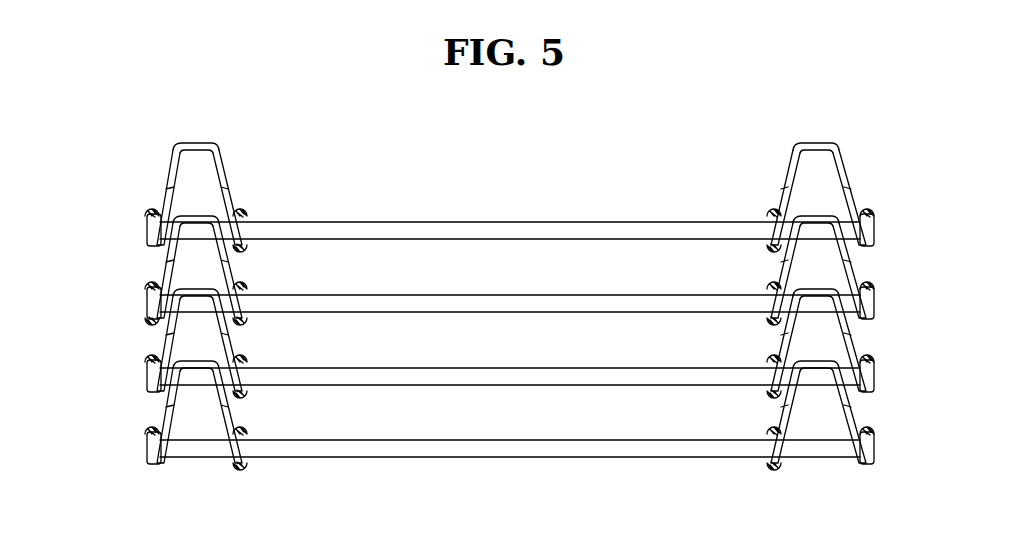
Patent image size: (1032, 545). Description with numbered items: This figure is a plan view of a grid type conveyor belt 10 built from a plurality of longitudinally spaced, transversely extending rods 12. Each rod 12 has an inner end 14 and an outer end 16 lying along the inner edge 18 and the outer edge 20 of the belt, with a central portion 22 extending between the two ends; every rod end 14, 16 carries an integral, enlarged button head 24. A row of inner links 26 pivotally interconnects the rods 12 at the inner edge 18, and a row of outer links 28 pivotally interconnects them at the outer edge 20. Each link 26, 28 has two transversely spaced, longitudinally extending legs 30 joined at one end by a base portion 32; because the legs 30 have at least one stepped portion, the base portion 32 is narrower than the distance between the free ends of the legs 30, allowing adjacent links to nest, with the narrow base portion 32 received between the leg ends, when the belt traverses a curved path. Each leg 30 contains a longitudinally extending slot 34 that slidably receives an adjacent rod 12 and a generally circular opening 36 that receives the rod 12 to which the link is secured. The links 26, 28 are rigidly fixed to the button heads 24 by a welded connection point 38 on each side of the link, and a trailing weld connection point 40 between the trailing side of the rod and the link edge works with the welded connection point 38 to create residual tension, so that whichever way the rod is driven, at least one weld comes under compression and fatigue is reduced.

The conveyor belt 10 is at (743, 143).
The rod 12 is at (455, 227).
The inner end 14 is at (148, 245).
The outer end 16 is at (868, 228).
The inner edge 18 is at (145, 176).
The outer edge 20 is at (887, 190).
The central portion 22 is at (553, 203).
The button head 24 is at (148, 224).
The inner link 26 is at (223, 152).
The outer link 28 is at (810, 148).
The leg 30 is at (169, 412).
The base portion 32 is at (190, 360).
The slot 34 is at (803, 395).
The circular opening 36 is at (220, 456).
The welded connection point 38 is at (245, 215).
The trailing weld connection point 40 is at (158, 318).